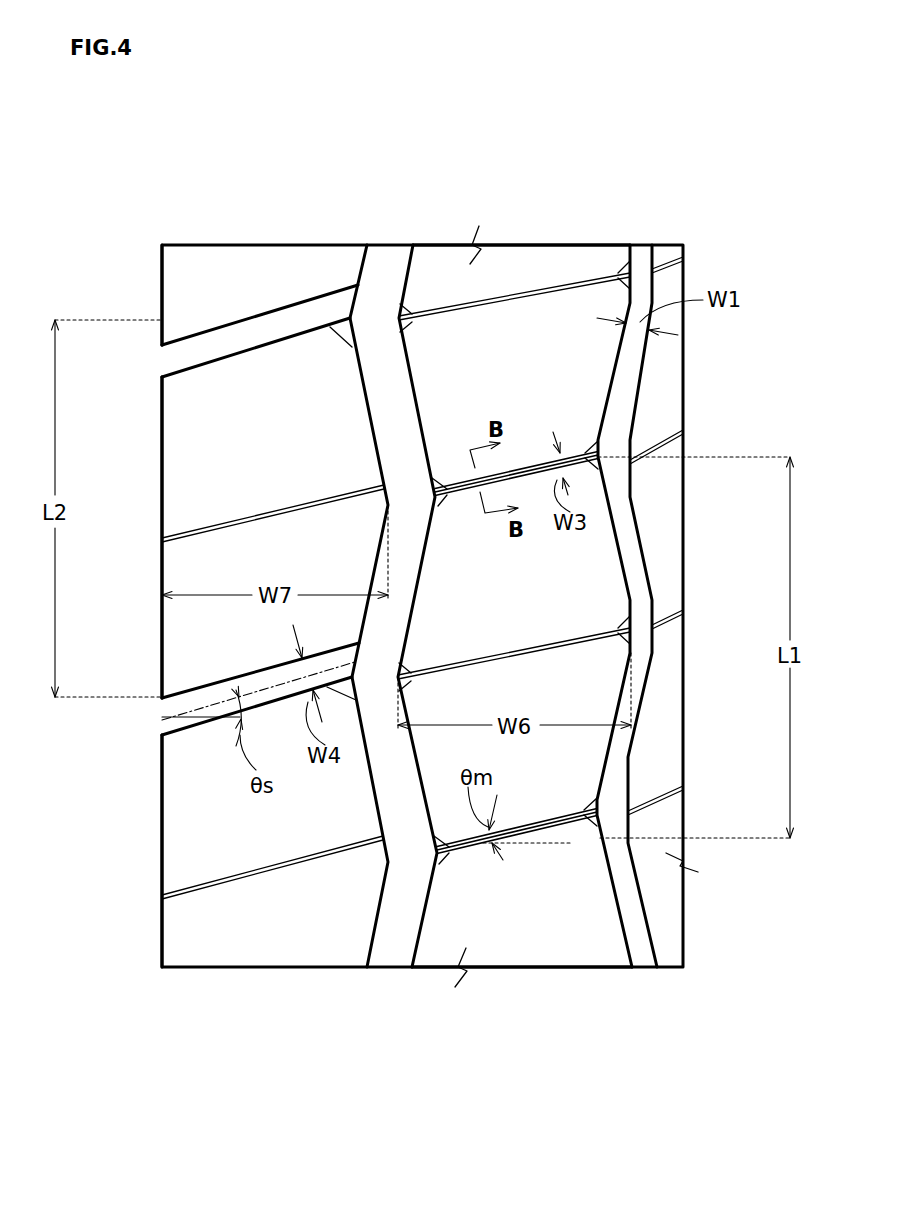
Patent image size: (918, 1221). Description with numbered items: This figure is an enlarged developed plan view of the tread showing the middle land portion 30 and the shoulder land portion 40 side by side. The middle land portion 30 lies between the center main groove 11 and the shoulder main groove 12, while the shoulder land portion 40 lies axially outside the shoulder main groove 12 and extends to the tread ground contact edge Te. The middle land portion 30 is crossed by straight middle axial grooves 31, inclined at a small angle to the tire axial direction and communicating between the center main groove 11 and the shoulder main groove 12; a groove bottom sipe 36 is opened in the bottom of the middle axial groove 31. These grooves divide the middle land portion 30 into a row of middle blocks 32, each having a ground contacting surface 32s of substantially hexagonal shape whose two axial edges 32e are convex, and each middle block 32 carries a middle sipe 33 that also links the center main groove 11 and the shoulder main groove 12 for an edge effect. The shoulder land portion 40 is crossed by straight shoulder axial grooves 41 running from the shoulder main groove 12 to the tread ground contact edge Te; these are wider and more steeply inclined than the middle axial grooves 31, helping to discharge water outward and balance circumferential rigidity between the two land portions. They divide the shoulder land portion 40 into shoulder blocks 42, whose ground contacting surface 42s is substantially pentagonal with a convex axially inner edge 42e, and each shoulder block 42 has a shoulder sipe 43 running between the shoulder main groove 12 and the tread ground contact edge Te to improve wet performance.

The center main groove 11 is at (640, 283).
The shoulder main groove 12 is at (385, 292).
The middle land portion 30 is at (507, 327).
The middle axial groove 31 is at (537, 457).
The middle block 32 is at (535, 373).
The edge of the middle block 32e is at (618, 545).
The ground contacting surface of the middle block 32s is at (540, 610).
The middle sipe 33 is at (563, 282).
The groove bottom sipe 36 is at (632, 832).
The shoulder land portion 40 is at (245, 282).
The shoulder axial groove 41 is at (228, 343).
The shoulder block 42 is at (247, 847).
The axially inner edge of the shoulder block 42e is at (383, 455).
The ground contacting surface of the shoulder block 42s is at (250, 478).
The shoulder sipe 43 is at (267, 512).
The tread ground contact edge Te is at (162, 292).